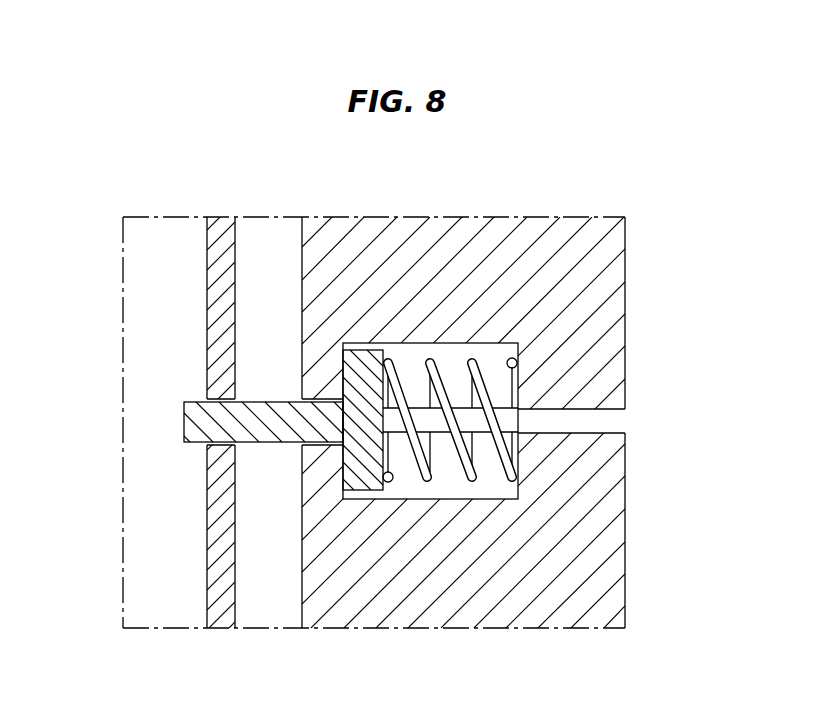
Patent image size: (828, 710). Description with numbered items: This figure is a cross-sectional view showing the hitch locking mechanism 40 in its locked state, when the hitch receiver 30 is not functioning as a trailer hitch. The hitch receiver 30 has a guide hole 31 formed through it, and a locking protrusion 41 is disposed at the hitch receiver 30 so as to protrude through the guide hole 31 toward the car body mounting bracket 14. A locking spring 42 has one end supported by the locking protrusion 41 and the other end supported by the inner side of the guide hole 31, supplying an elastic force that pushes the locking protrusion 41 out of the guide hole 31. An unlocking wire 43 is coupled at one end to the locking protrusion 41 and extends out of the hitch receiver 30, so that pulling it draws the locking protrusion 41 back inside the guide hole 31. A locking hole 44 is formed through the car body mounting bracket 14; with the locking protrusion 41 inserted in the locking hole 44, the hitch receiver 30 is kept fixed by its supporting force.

The car body mounting bracket 14 is at (220, 290).
The hitch receiver 30 is at (595, 288).
The guide hole 31 is at (455, 350).
The hitch locking mechanism 40 is at (172, 404).
The locking protrusion 41 is at (207, 420).
The locking spring 42 is at (465, 478).
The unlocking wire 43 is at (613, 420).
The locking hole 44 is at (218, 443).